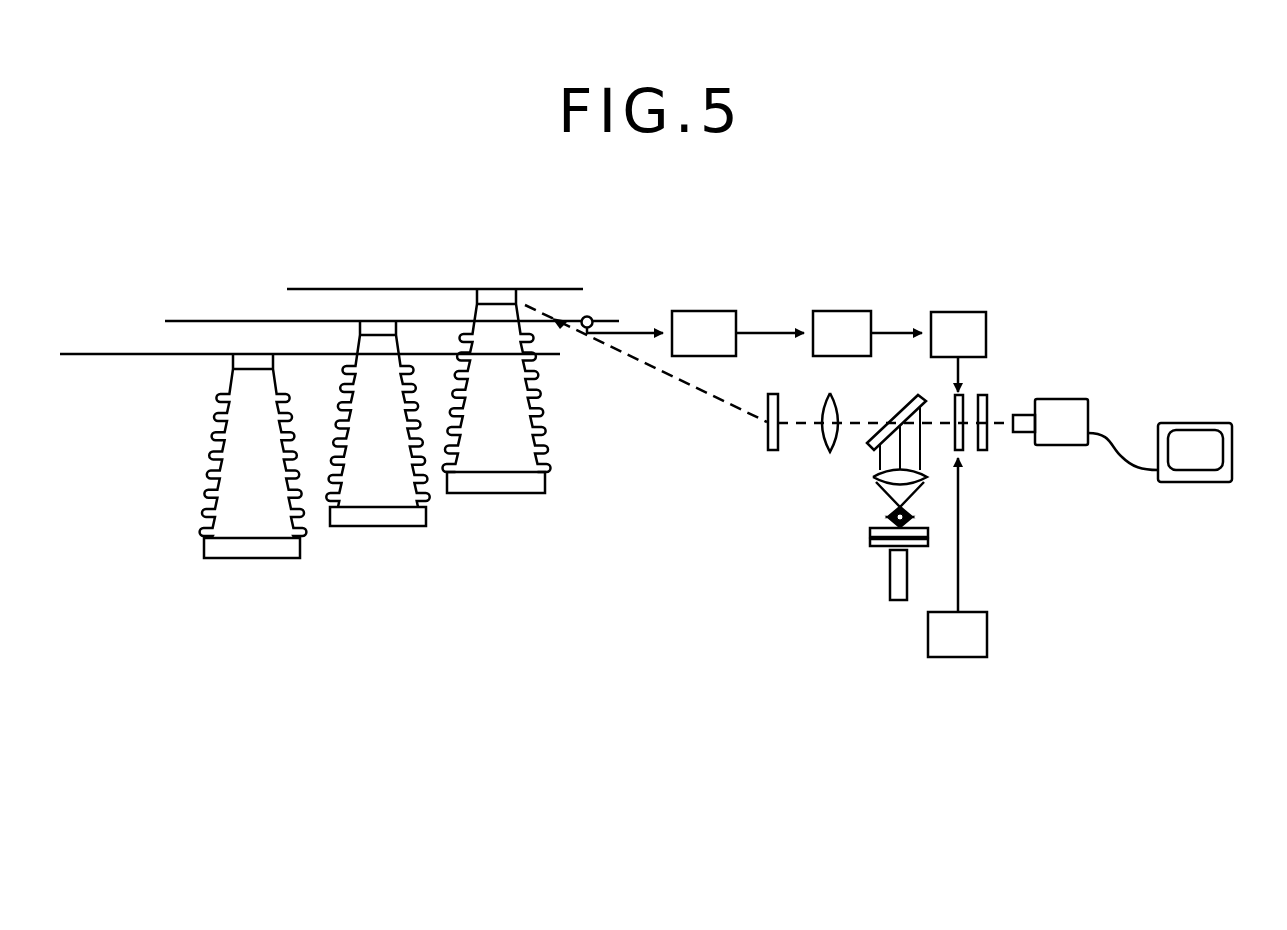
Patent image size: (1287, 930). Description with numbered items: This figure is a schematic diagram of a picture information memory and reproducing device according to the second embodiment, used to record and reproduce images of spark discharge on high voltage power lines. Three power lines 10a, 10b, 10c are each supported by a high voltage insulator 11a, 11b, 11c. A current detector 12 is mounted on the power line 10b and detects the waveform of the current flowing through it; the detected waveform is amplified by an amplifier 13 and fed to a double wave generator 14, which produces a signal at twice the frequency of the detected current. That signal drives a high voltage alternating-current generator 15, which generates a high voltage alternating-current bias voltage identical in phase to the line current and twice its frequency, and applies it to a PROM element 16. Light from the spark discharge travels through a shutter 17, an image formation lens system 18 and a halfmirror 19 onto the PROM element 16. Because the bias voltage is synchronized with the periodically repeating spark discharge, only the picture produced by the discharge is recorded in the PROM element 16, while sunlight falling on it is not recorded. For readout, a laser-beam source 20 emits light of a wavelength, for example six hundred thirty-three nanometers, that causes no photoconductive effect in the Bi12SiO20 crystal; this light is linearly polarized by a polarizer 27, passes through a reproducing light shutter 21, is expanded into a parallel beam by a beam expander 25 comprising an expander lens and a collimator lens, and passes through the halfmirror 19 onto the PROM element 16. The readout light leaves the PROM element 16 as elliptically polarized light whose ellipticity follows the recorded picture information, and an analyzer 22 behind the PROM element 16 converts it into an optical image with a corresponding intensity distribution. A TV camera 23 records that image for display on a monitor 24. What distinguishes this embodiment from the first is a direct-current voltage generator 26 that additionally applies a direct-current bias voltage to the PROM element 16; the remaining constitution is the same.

The power line 10a is at (147, 354).
The power line 10b is at (222, 321).
The power line 10c is at (325, 289).
The high voltage insulator 11a is at (248, 558).
The high voltage insulator 11b is at (378, 527).
The high voltage insulator 11c is at (487, 494).
The current detector 12 is at (592, 316).
The amplifier 13 is at (712, 311).
The double wave generator 14 is at (845, 311).
The high voltage alternating-current generator 15 is at (958, 312).
The PROM element 16 is at (966, 400).
The shutter 17 is at (771, 450).
The image formation lens system 18 is at (823, 450).
The halfmirror 19 is at (897, 415).
The laser-beam source 20 is at (890, 580).
The reproducing light shutter 21 is at (870, 532).
The analyzer 22 is at (985, 450).
The TV camera 23 is at (1068, 445).
The monitor 24 is at (1208, 482).
The beam expander 25 is at (866, 470).
The direct-current voltage generator 26 is at (976, 635).
The polarizer 27 is at (870, 543).